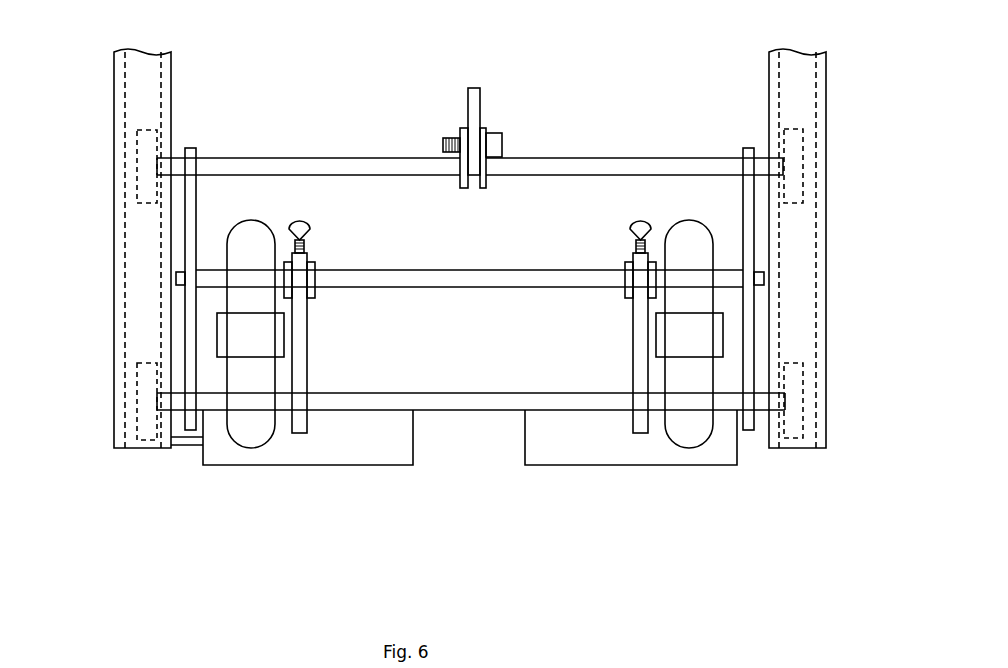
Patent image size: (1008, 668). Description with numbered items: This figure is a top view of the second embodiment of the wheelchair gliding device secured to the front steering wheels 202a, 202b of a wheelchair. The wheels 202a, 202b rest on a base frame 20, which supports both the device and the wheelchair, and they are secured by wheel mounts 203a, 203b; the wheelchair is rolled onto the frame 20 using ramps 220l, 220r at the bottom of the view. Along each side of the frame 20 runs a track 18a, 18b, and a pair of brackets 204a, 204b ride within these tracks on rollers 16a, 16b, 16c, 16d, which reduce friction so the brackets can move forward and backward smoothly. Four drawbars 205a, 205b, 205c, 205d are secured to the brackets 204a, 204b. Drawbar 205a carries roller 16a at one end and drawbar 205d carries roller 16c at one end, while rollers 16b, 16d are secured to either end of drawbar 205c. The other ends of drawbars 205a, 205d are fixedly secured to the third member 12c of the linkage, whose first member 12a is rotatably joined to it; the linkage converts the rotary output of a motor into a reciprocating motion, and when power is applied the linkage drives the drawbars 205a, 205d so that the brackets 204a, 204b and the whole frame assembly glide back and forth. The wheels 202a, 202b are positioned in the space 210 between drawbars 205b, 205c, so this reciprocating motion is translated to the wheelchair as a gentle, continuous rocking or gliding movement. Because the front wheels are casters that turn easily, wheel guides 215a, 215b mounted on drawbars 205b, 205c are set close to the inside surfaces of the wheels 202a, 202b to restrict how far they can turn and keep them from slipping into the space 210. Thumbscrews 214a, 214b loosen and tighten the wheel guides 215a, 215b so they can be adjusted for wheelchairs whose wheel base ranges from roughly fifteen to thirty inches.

The first member 12a is at (466, 96).
The third member 12c is at (487, 182).
The roller 16a is at (153, 168).
The roller 16b is at (153, 389).
The roller 16c is at (790, 167).
The roller 16d is at (790, 389).
The track 18a is at (107, 248).
The track 18b is at (833, 248).
The frame 20 is at (624, 49).
The wheelchair wheel 202a is at (255, 220).
The wheelchair wheel 202b is at (688, 220).
The wheel mount 203a is at (217, 335).
The wheel mount 203b is at (723, 340).
The bracket 204a is at (190, 147).
The bracket 204b is at (746, 147).
The drawbar 205a is at (353, 158).
The drawbar 205b is at (420, 270).
The drawbar 205c is at (413, 393).
The drawbar 205d is at (593, 158).
The space 210 is at (471, 294).
The thumbscrew 214a is at (310, 226).
The thumbscrew 214b is at (632, 228).
The wheel guide 215a is at (307, 325).
The wheel guide 215b is at (633, 338).
The ramp 220l is at (303, 467).
The ramp 220r is at (600, 467).